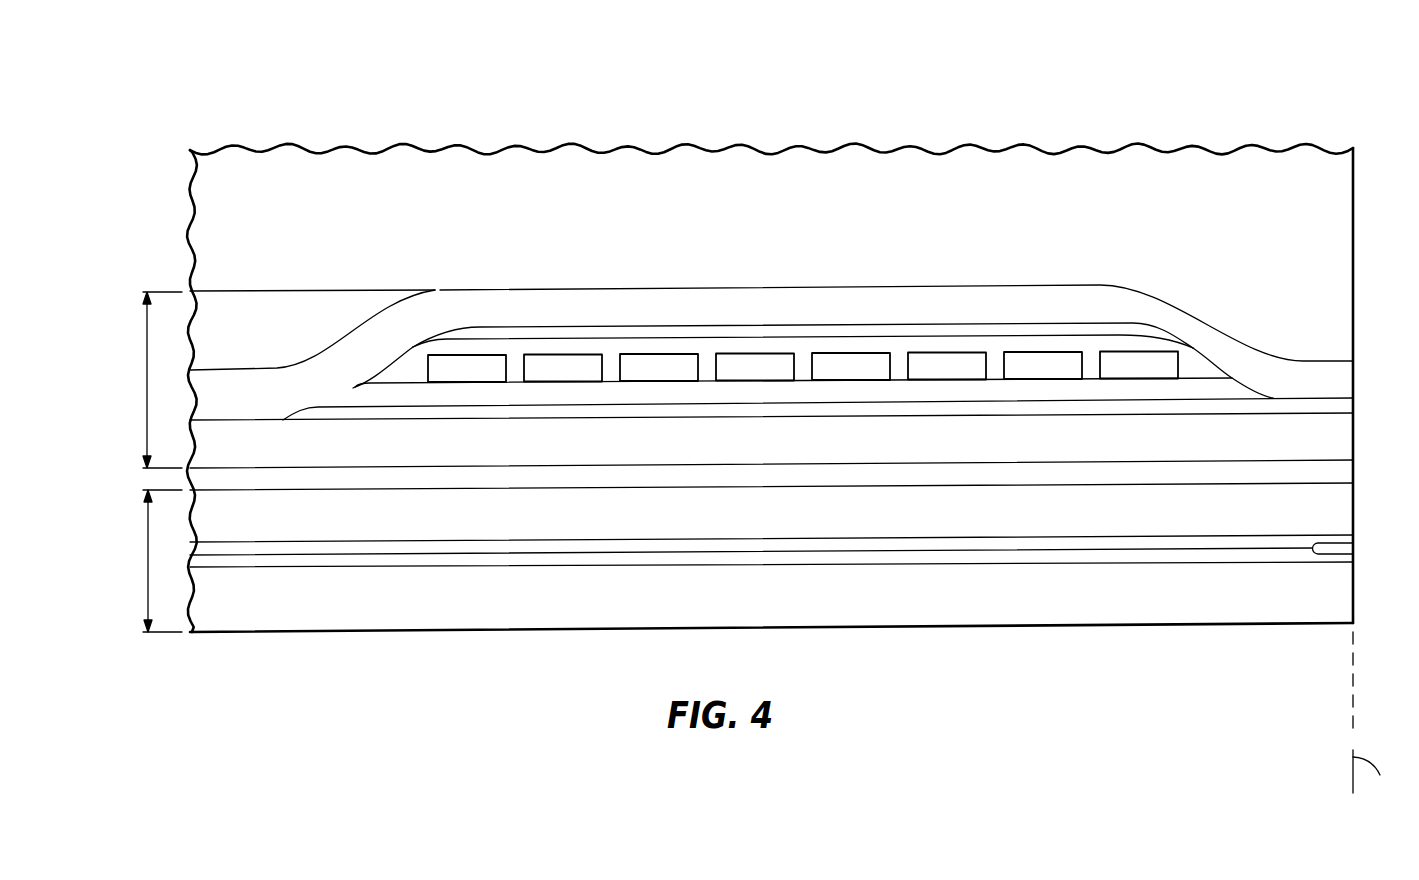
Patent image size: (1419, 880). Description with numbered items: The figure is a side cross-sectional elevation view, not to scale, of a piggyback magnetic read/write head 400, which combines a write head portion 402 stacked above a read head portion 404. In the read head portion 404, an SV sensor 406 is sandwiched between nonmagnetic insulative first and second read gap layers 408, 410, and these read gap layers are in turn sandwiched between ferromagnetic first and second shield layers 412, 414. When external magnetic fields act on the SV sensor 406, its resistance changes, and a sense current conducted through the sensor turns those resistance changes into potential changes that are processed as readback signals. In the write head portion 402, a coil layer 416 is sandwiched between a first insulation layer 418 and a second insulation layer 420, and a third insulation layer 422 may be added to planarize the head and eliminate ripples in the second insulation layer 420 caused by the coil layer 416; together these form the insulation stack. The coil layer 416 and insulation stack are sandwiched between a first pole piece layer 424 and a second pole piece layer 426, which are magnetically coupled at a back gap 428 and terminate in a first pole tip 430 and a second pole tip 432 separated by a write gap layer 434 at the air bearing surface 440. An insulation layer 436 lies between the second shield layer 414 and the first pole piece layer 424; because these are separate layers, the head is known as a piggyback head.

The magnetic read/write head 400 is at (230, 98).
The write head portion 402 is at (145, 369).
The read head portion 404 is at (145, 549).
The SV sensor 406 is at (1355, 548).
The first read gap layer 408 is at (857, 565).
The second read gap layer 410 is at (832, 536).
The first shield layer 412 is at (1017, 618).
The second shield layer 414 is at (1100, 522).
The coil layer 416 is at (748, 360).
The first insulation layer 418 is at (610, 397).
The second insulation layer 420 is at (1200, 363).
The third insulation layer 422 is at (528, 330).
The first pole piece layer 424 is at (1153, 445).
The second pole piece layer 426 is at (1012, 295).
The back gap 428 is at (231, 420).
The first pole tip 430 is at (1355, 437).
The second pole tip 432 is at (1355, 378).
The write gap layer 434 is at (1355, 405).
The insulation layer 436 is at (1355, 474).
The ABS 440 is at (1378, 733).